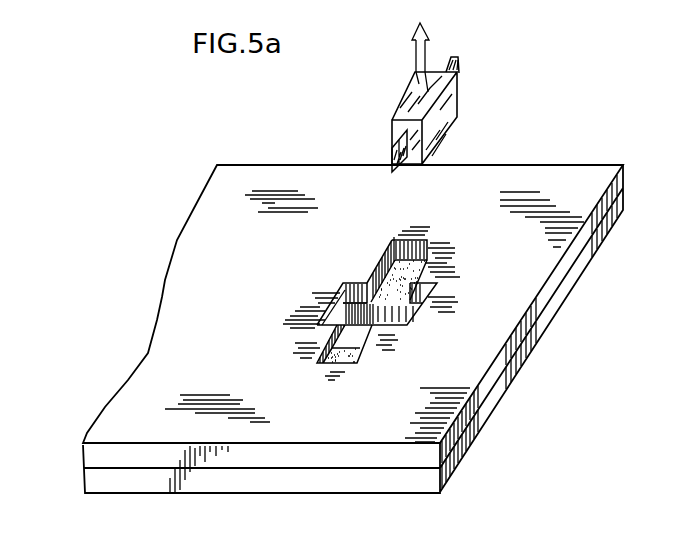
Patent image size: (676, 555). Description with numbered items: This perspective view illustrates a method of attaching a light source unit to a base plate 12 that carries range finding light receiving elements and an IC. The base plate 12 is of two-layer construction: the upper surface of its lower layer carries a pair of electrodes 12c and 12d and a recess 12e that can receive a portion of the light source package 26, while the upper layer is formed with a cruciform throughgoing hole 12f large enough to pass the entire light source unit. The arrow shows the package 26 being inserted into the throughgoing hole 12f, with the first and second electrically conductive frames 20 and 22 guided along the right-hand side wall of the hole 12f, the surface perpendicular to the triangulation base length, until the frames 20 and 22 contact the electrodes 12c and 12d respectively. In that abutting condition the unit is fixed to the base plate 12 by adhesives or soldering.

The base plate 12 is at (565, 173).
The electrode 12c is at (350, 358).
The electrode 12d is at (398, 277).
The recess 12e is at (357, 302).
The cruciform throughgoing hole 12f is at (412, 307).
The first electrically conductive frame 20 is at (407, 143).
The second electrically conductive frame 22 is at (459, 62).
The light source package 26 is at (457, 117).